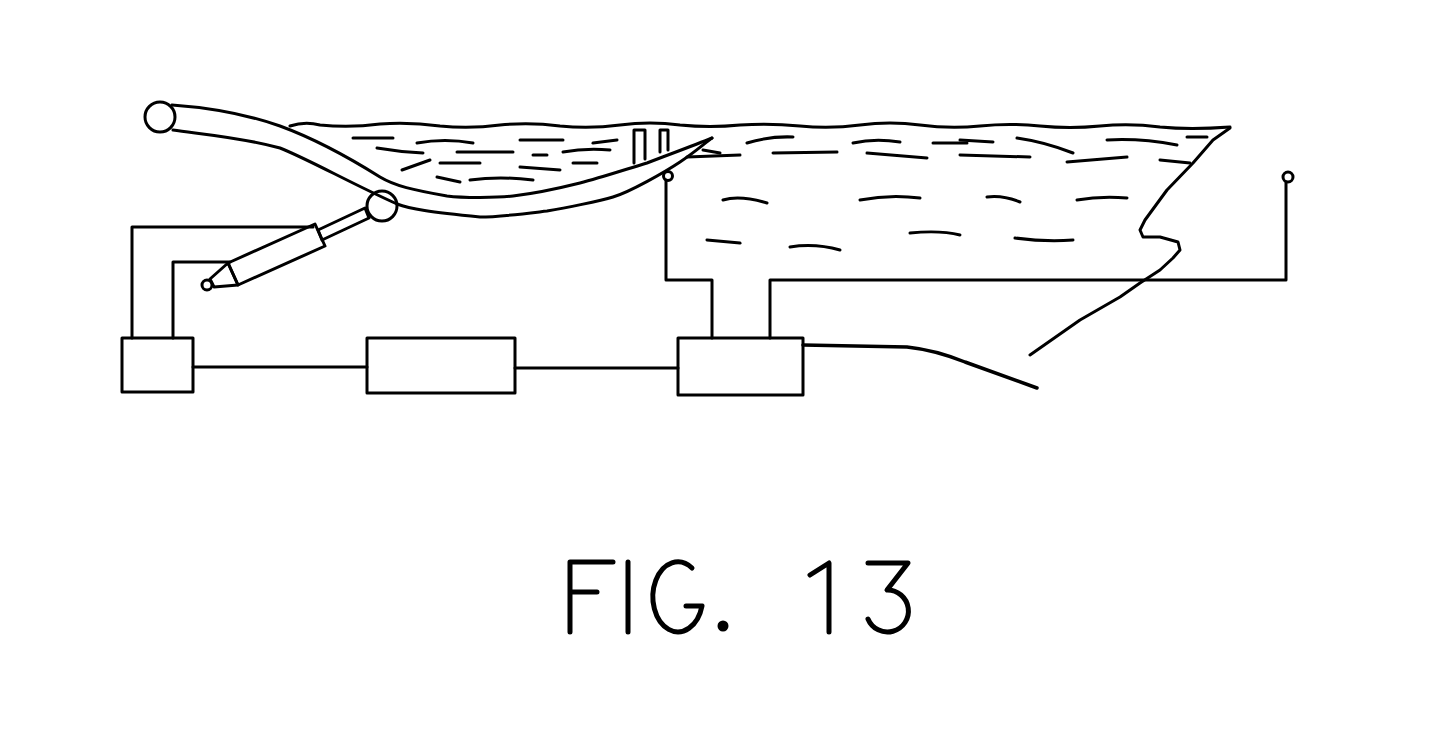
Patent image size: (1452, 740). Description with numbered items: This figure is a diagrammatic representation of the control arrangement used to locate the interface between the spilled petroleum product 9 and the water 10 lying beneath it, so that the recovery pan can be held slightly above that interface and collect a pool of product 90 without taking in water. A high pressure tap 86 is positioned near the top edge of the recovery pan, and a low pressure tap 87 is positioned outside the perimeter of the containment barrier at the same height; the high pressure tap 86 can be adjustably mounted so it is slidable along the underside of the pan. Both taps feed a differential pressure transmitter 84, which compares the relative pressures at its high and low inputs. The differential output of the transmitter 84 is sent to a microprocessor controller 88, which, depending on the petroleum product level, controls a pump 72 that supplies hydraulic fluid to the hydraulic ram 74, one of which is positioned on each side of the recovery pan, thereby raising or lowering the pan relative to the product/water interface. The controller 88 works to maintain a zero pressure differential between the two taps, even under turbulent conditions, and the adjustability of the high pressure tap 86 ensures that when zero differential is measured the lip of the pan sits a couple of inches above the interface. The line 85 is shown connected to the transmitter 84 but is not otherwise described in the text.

The spilled petroleum product 9 is at (933, 147).
The water 10 is at (1042, 193).
The pool of product 90 is at (493, 140).
The hydraulic ram 74 is at (263, 260).
The pump 72 is at (145, 377).
The microprocessor controller 88 is at (433, 368).
The differential pressure transmitter 84 is at (772, 381).
The reference cable 85 is at (956, 380).
The high pressure tap 86 is at (673, 176).
The low pressure tap 87 is at (1292, 172).